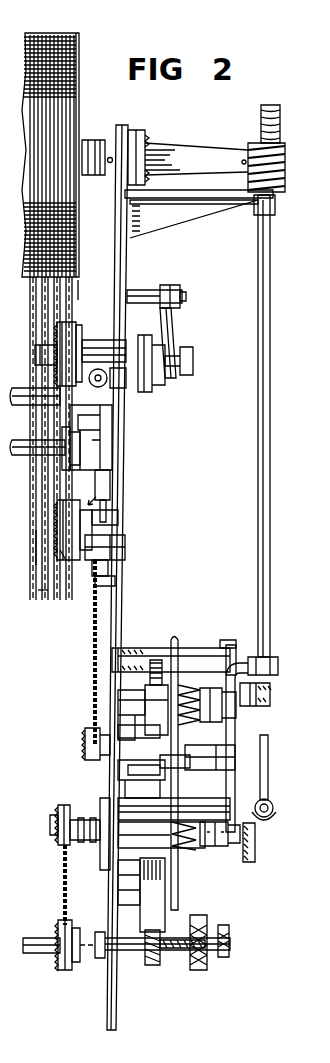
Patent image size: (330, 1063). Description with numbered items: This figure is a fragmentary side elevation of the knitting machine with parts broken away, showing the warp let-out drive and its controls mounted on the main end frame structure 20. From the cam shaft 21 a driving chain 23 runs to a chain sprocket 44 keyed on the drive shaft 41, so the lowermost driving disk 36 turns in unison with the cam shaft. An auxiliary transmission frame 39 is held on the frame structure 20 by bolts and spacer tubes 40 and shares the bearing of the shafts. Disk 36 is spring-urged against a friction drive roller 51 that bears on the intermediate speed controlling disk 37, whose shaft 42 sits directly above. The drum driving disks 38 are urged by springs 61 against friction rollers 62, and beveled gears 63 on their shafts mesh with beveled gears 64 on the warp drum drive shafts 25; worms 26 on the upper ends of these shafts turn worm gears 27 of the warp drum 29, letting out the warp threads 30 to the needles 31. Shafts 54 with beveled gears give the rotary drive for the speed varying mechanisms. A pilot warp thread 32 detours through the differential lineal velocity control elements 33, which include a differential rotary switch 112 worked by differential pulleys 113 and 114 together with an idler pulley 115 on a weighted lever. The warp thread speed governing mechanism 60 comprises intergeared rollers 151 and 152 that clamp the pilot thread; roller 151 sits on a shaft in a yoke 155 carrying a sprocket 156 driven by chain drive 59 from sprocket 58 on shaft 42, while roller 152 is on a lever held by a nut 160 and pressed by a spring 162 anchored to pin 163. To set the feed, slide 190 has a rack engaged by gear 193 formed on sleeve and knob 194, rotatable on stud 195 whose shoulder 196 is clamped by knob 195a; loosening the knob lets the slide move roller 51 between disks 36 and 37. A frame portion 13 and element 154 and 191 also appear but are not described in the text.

The frame 13 is at (321, 947).
The frame structure 20 is at (108, 1018).
The cam shaft 21 is at (38, 956).
The driving chain 23 is at (62, 887).
The warp drum drive shaft 25 is at (272, 376).
The worm 26 is at (286, 160).
The worm gear 27 is at (282, 120).
The warp drum 29 is at (77, 36).
The warp threads 30 is at (36, 548).
The needles 31 is at (43, 591).
The warp thread (pilot thread) 32 is at (77, 289).
The differential lineal velocity control elements 33 is at (235, 275).
The driving disk 36 is at (172, 876).
The intermediate speed controlling disk 37 is at (128, 771).
The drum driving disk 38 is at (170, 636).
The auxiliary transmission frame 39 is at (226, 646).
The bolts and spacer tubes 40 is at (126, 648).
The drive shaft 41 is at (82, 846).
The shaft 42 is at (240, 736).
The chain sprocket 44 is at (60, 810).
The friction drive roller 51 is at (165, 790).
The shaft 54 is at (269, 763).
The sprocket 58 is at (88, 743).
The chain drive 59 is at (92, 626).
The warp thread speed governing mechanism 60 is at (104, 494).
The spring 61 is at (188, 684).
The friction roller 62 is at (165, 765).
The beveled gear 63 is at (262, 696).
The beveled gear 64 is at (272, 686).
The differential rotary switch 112 is at (187, 335).
The differential pulley 113 is at (60, 323).
The differential pulley 114 is at (76, 336).
The idler pulley 115 is at (60, 435).
The roller 151 is at (58, 514).
The roller 152 is at (63, 556).
The bracket 154 is at (90, 433).
The yoke 155 is at (100, 516).
The sprocket 156 is at (110, 493).
The nut 160 is at (125, 545).
The spring 162 is at (100, 563).
The pin 163 is at (112, 578).
The slide 190 is at (120, 780).
The lever 191 is at (172, 910).
The gear 193 is at (166, 965).
The sleeve and knob 194 is at (207, 966).
The stud 195 is at (172, 952).
The knob 195a is at (228, 930).
The shoulder 196 is at (155, 956).